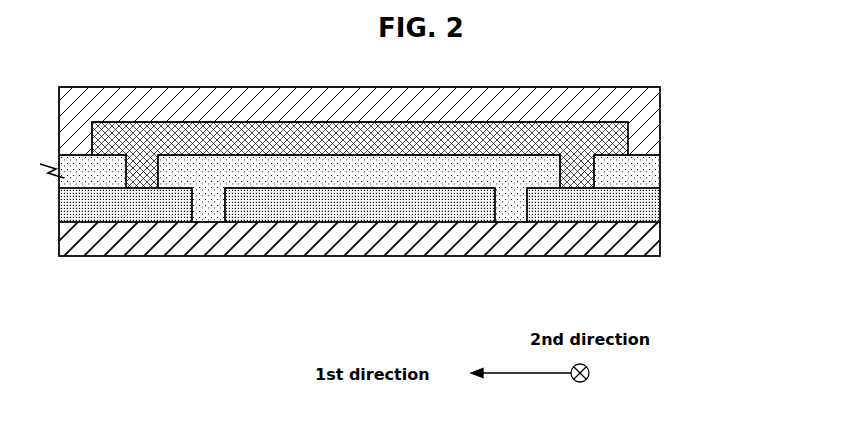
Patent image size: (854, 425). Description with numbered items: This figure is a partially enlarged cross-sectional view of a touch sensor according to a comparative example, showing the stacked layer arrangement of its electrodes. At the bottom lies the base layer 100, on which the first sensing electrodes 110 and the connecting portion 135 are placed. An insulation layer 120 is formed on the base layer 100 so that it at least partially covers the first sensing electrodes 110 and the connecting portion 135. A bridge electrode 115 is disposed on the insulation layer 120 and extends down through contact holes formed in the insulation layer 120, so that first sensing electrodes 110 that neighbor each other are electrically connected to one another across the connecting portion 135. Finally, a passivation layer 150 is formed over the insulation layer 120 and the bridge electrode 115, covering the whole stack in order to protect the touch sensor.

The base layer 100 is at (662, 238).
The first sensing electrodes 110 is at (662, 200).
The connecting portion 135 is at (358, 208).
The insulation layer 120 is at (652, 171).
The bridge electrode 115 is at (628, 130).
The passivation layer 150 is at (662, 97).